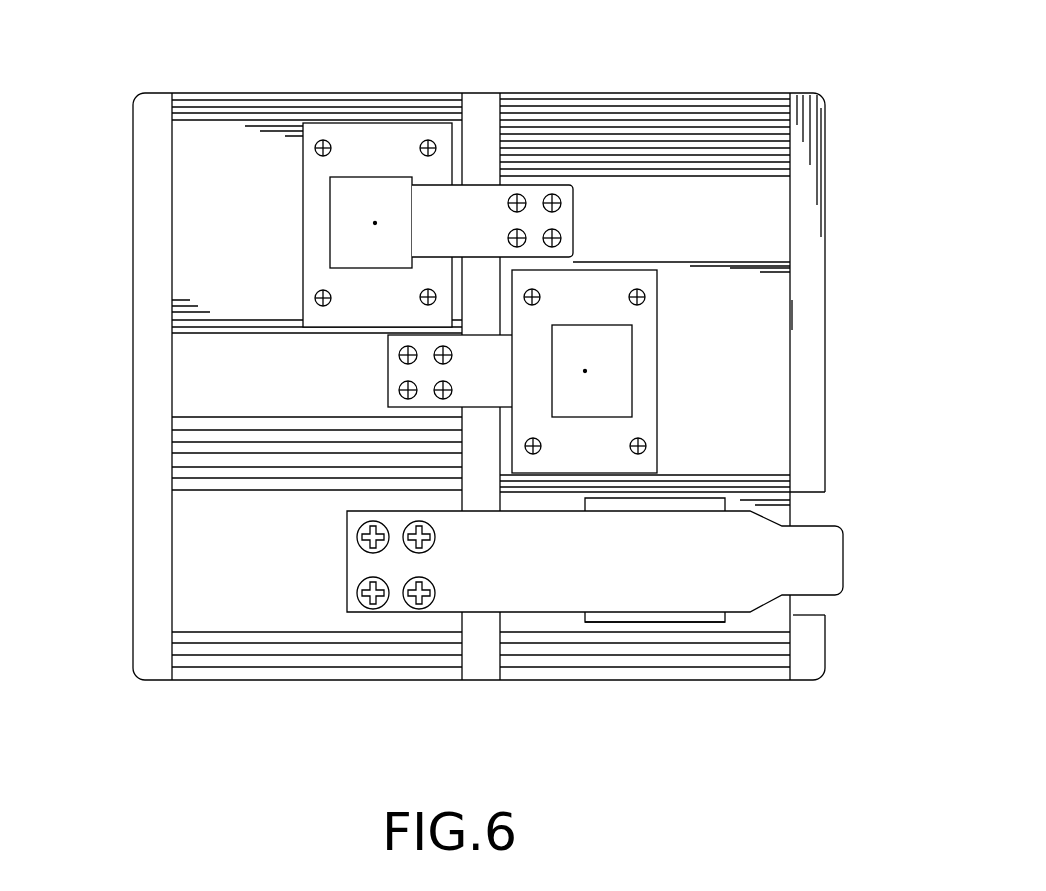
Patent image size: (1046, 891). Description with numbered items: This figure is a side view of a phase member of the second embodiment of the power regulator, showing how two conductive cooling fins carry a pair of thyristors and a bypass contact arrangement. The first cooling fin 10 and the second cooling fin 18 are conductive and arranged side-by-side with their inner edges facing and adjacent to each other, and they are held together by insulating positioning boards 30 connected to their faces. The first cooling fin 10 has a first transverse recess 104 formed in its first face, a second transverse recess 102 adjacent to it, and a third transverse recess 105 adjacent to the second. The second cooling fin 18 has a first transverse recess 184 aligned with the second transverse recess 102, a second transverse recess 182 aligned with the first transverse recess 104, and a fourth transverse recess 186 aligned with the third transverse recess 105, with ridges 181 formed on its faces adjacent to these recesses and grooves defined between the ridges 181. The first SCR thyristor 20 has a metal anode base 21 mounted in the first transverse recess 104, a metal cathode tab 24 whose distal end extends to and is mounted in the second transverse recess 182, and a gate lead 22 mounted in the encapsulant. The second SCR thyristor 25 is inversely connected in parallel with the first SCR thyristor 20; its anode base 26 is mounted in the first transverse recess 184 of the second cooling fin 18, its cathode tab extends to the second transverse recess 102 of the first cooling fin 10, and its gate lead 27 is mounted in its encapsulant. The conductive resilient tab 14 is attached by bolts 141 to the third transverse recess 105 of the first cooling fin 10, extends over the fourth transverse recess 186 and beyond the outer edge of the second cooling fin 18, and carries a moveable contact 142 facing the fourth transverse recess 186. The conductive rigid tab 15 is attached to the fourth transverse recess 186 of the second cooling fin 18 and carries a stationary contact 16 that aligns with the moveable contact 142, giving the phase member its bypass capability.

The first cooling fin 10 is at (237, 93).
The conductive resilient tab 14 is at (612, 616).
The bolts 141 is at (419, 609).
The moveable contact 142 is at (692, 586).
The conductive rigid tab 15 is at (707, 628).
The stationary contact 16 is at (725, 553).
The second cooling fin 18 is at (790, 143).
The ridges 181 is at (663, 127).
The second transverse recess 182 is at (740, 217).
The first transverse recess 184 is at (773, 462).
The fourth transverse recess 186 is at (782, 513).
The first SCR thyristor 20 is at (299, 180).
The anode base 21 is at (413, 135).
The gate lead 22 is at (345, 232).
The cathode tab 24 is at (477, 203).
The second SCR thyristor 25 is at (707, 371).
The anode base 26 is at (645, 367).
The gate lead 27 is at (613, 383).
The positioning board 30 is at (805, 312).
The second transverse recess 102 is at (187, 355).
The first transverse recess 104 is at (192, 167).
The third transverse recess 105 is at (203, 565).